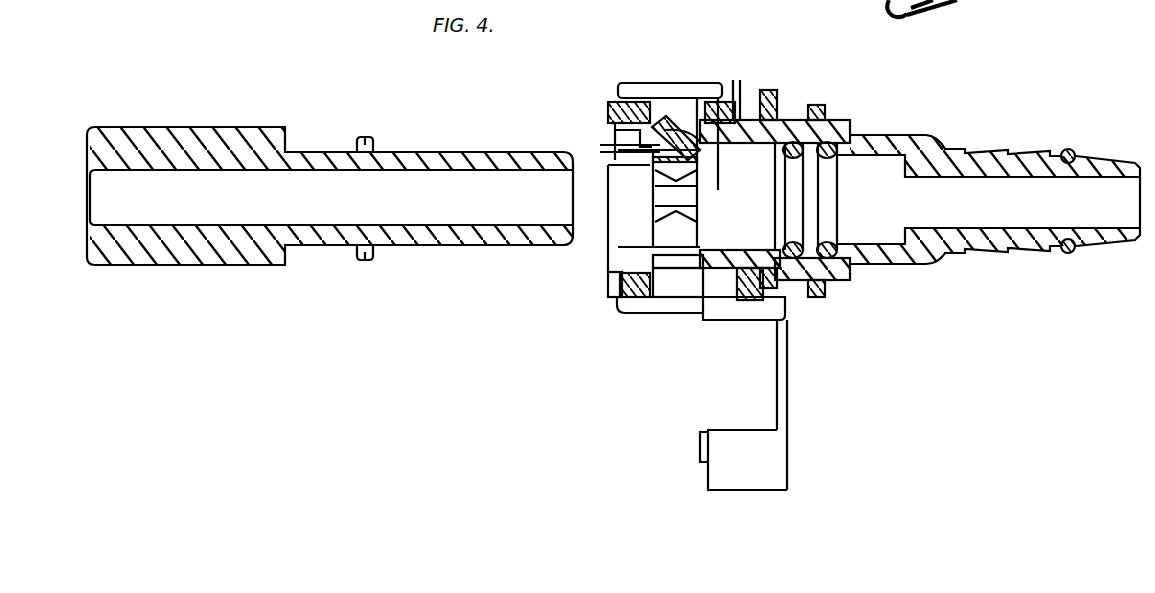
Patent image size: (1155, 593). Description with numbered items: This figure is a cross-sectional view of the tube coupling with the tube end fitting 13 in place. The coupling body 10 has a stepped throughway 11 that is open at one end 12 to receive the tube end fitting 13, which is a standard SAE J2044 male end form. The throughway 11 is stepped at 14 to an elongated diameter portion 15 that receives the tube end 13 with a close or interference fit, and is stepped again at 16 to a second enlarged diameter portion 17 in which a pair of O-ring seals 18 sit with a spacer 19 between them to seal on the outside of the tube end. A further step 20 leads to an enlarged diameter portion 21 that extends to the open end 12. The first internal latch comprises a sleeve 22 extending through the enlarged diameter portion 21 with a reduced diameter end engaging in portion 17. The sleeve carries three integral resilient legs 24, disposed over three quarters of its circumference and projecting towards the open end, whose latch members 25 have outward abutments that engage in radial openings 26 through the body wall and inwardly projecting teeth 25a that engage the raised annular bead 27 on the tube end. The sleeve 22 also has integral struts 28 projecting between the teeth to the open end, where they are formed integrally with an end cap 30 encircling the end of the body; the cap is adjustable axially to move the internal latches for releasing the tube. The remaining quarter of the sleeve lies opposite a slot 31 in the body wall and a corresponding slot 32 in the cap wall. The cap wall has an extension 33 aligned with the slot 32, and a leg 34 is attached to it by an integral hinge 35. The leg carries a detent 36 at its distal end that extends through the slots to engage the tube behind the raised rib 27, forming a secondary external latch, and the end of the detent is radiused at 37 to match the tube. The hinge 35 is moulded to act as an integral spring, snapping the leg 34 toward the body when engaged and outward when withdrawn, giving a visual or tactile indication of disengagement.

The coupling body 10 is at (930, 118).
The stepped throughway 11 is at (950, 210).
The open end of the coupling body 12 is at (620, 128).
The tube end fitting 13 is at (296, 104).
The step of the throughway 14 is at (933, 253).
The elongated diameter portion 15 is at (878, 258).
The step of the throughway 16 is at (840, 262).
The second enlarged diameter portion 17 is at (802, 270).
The O-ring seals 18 is at (793, 141).
The spacer 19 is at (823, 104).
The further step of the throughway 20 is at (745, 120).
The enlarged diameter portion 21 is at (703, 135).
The sleeve 22 is at (783, 320).
The resilient legs 24 is at (690, 118).
The latch members 25 is at (640, 120).
The inwardly projecting teeth 25a is at (600, 129).
The radial openings 26 is at (690, 128).
The raised annular abutment or bead 27 is at (364, 135).
The struts 28 is at (612, 155).
The end cap 30 is at (650, 310).
The slot in the coupling body 31 is at (608, 283).
The slot in the cap 32 is at (628, 302).
The extension 33 is at (740, 305).
The leg 34 is at (789, 385).
The integral hinge 35 is at (786, 325).
The detent 36 is at (775, 471).
The radiused end of the detent 37 is at (700, 445).